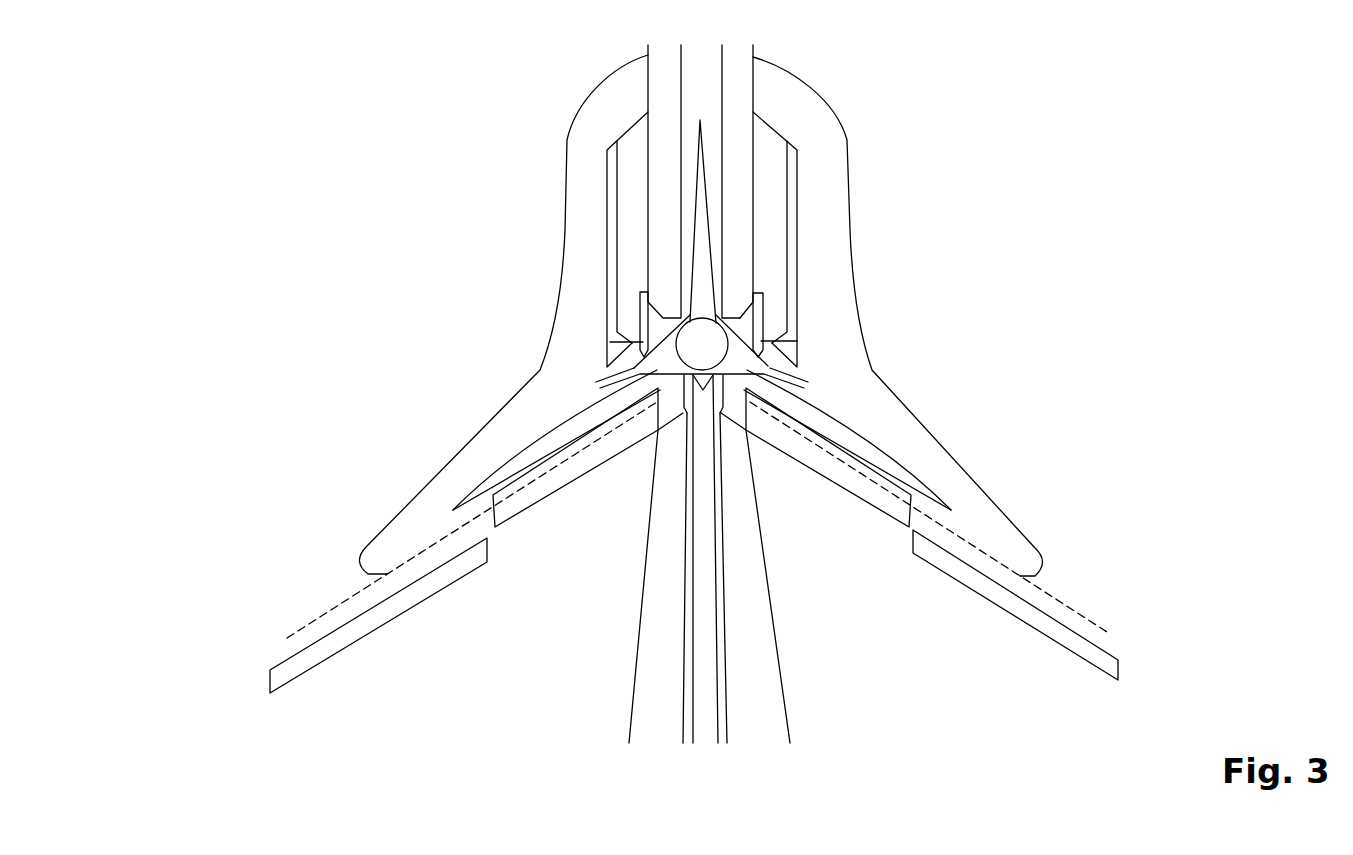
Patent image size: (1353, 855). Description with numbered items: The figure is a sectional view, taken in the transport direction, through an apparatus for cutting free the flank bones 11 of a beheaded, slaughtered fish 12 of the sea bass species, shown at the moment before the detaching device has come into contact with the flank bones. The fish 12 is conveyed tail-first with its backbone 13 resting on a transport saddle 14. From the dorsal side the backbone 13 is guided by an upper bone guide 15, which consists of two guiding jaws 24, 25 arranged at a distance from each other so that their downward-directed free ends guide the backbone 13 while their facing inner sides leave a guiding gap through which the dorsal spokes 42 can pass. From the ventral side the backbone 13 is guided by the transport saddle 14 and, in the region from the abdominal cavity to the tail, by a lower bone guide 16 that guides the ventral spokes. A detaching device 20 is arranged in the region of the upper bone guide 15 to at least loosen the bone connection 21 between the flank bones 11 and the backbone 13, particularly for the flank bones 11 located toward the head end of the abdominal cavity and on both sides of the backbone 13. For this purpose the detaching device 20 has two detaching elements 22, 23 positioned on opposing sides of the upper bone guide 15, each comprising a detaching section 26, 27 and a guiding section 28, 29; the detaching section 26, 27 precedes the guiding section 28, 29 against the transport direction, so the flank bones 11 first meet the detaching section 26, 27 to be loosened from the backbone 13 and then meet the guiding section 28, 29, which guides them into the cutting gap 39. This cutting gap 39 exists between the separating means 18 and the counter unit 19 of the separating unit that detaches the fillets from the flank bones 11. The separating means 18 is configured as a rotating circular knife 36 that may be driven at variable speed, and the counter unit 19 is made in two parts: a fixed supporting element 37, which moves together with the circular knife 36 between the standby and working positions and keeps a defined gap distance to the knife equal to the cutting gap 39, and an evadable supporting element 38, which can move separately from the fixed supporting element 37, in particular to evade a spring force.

The flank bones 11 is at (527, 435).
The fish 12 is at (890, 180).
The backbone 13 is at (716, 326).
The transport saddles 14 is at (686, 585).
The upper bone guide 15 is at (760, 80).
The lower bone guide 16 is at (756, 605).
The separating means 18 is at (336, 592).
The counter unit 19 is at (442, 615).
The detaching device 20 is at (580, 304).
The bone connection 21 is at (610, 380).
The detaching element 22 is at (610, 162).
The detaching element 23 is at (796, 162).
The guiding jaw 24 is at (648, 52).
The guiding jaw 25 is at (754, 52).
The detaching section 26 is at (610, 342).
The detaching section 27 is at (798, 347).
The guiding section 28 is at (612, 358).
The guiding section 29 is at (790, 357).
The circular knife 36 is at (303, 628).
The fixed supporting element 37 is at (352, 630).
The evadable supporting element 38 is at (563, 482).
The cutting gap 39 is at (302, 637).
The dorsal spokes 42 is at (698, 210).